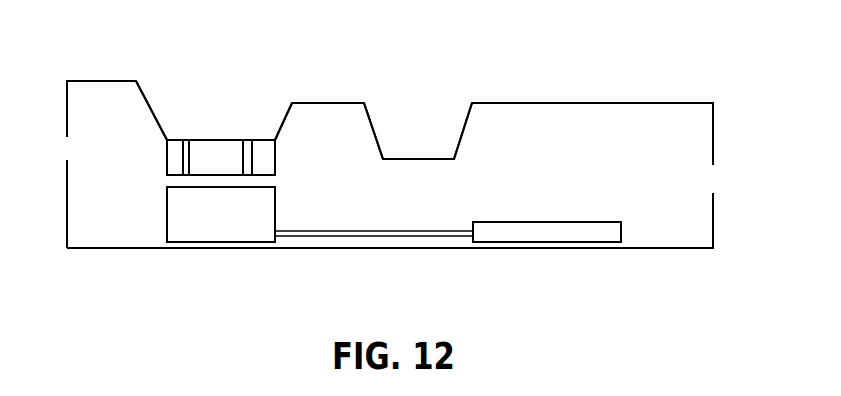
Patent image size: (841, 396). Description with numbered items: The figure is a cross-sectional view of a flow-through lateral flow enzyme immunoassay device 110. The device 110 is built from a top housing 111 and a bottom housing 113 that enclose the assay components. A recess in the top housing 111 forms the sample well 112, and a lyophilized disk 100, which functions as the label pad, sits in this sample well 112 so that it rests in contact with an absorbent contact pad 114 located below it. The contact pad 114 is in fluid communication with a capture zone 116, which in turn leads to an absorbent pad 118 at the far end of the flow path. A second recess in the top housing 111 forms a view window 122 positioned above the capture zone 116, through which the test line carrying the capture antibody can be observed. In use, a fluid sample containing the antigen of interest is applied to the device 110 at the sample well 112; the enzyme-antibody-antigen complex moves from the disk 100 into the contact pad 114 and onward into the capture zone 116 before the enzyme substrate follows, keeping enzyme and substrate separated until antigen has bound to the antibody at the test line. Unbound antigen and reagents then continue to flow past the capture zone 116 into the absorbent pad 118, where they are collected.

The disk 100 is at (223, 129).
The flow-through device 110 is at (634, 79).
The top housing 111 is at (713, 133).
The sample well 112 is at (189, 96).
The bottom housing 113 is at (713, 214).
The absorbent contact pad 114 is at (210, 236).
The capture zone 116 is at (387, 236).
The absorbent pad 118 is at (562, 236).
The view window 122 is at (410, 132).